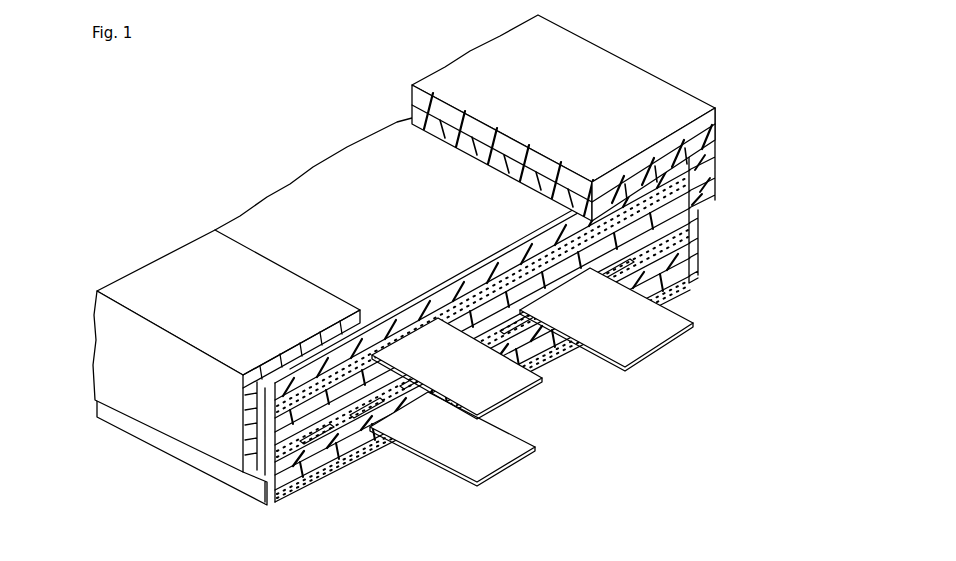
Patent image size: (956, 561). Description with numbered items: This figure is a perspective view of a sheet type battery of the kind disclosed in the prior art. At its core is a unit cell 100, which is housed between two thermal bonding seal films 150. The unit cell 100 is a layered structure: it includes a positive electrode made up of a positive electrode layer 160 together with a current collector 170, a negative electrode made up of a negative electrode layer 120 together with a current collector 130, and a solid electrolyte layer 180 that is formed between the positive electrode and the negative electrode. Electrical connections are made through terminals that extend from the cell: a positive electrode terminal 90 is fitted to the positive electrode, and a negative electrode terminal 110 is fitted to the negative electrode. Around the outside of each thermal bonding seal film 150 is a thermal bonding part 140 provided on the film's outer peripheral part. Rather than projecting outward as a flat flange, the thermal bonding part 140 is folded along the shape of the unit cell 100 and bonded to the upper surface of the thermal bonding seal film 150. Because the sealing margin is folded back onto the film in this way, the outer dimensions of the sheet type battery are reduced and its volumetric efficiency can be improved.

The unit cell 100 is at (554, 305).
The negative electrode terminal 110 is at (653, 337).
The negative electrode layer 120 is at (697, 221).
The current collector 130 is at (517, 343).
The thermal bonding part 140 is at (174, 259).
The thermal bonding seal film 150 is at (339, 175).
The positive electrode layer 160 is at (708, 160).
The current collector 170 is at (707, 182).
The solid electrolyte layer 180 is at (697, 200).
The positive electrode terminal 90 is at (513, 387).